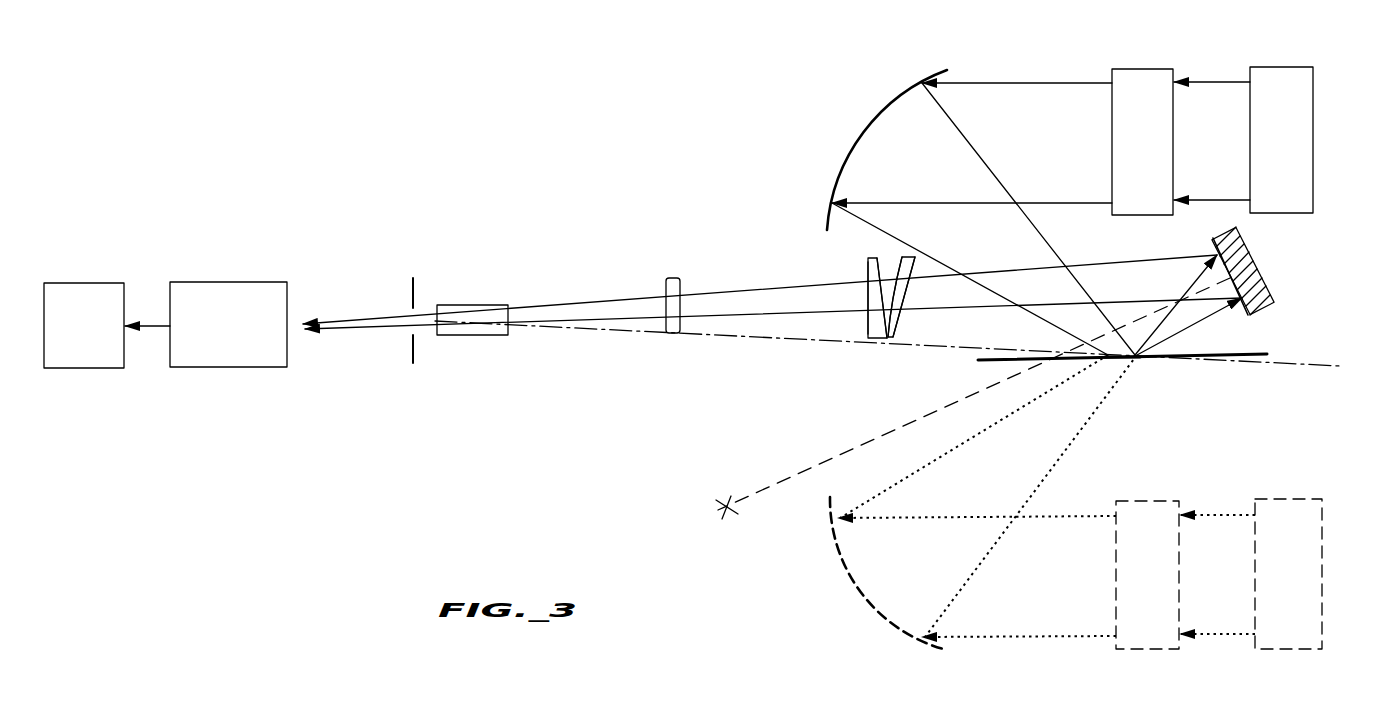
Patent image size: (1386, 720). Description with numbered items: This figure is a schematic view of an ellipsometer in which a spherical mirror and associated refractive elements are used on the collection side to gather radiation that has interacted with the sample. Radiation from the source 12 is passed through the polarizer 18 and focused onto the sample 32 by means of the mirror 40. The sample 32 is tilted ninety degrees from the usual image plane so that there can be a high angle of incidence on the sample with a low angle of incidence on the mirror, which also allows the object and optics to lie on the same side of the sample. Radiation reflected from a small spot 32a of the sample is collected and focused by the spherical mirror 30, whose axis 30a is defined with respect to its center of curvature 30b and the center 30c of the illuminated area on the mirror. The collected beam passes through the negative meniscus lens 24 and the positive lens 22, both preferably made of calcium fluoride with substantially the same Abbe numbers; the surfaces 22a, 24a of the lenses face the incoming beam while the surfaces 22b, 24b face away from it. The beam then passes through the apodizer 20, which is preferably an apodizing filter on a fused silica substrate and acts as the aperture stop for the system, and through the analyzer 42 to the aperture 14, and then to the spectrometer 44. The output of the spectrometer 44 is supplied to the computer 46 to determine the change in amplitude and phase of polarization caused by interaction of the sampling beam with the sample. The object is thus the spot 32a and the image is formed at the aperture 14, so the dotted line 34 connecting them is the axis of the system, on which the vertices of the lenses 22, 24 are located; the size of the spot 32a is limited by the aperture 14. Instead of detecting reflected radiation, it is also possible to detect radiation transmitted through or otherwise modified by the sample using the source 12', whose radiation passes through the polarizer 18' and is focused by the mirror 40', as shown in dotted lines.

The source 12 is at (1293, 122).
The polarizer 18 is at (1155, 123).
The mirror 40 is at (881, 150).
The spherical mirror 30 is at (1248, 252).
The center of the illuminated area on the mirror 30c is at (1227, 272).
The axis of the mirror 30a is at (860, 443).
The center of curvature 30b is at (722, 514).
The sample 32 is at (1252, 352).
The spot 32a is at (1137, 359).
The positive lens 22 is at (860, 318).
The surface of lens 22 22a is at (864, 292).
The surface of lens 22 22b is at (879, 264).
The negative meniscus lens 24 is at (900, 326).
The surface of lens 24 24a is at (889, 256).
The surface of lens 24 24b is at (908, 290).
The apodizing filter 20 is at (677, 277).
The axis 34 is at (627, 336).
The analyzer 42 is at (488, 303).
The aperture 14 is at (417, 283).
The spectrometer 44 is at (225, 281).
The computer 46 is at (97, 282).
The mirror 40' is at (867, 573).
The polarizer 18' is at (1165, 557).
The source 12' is at (1305, 557).